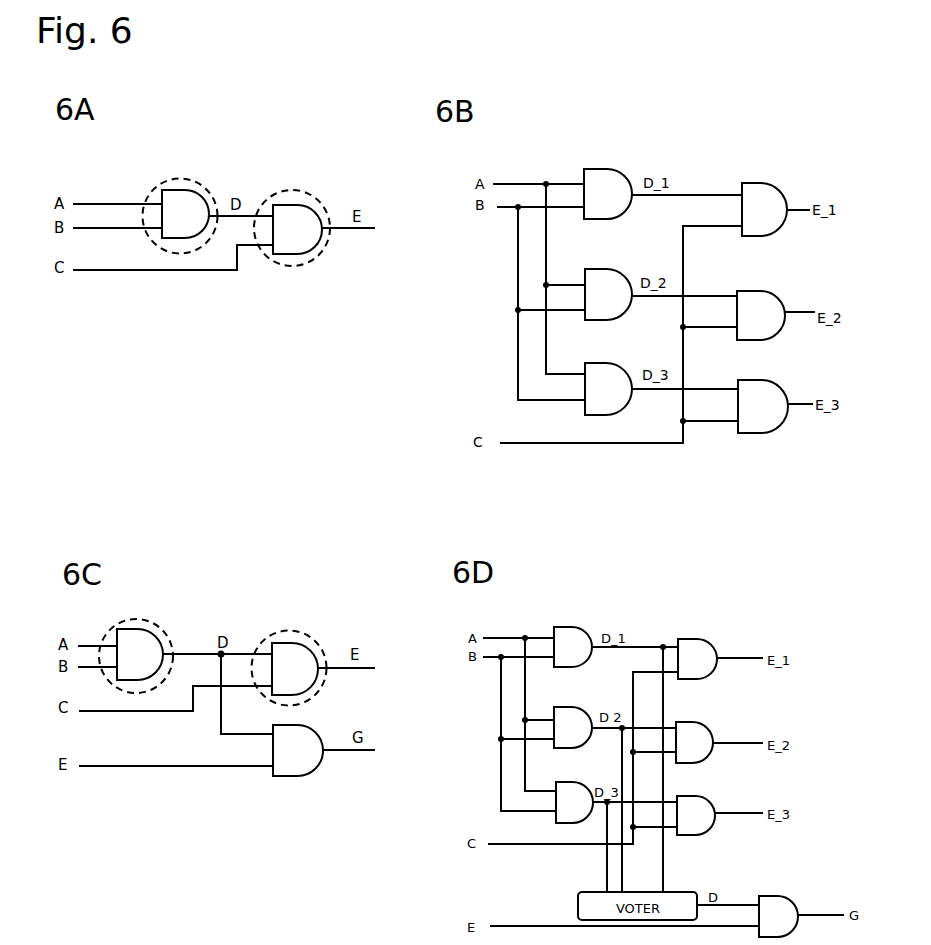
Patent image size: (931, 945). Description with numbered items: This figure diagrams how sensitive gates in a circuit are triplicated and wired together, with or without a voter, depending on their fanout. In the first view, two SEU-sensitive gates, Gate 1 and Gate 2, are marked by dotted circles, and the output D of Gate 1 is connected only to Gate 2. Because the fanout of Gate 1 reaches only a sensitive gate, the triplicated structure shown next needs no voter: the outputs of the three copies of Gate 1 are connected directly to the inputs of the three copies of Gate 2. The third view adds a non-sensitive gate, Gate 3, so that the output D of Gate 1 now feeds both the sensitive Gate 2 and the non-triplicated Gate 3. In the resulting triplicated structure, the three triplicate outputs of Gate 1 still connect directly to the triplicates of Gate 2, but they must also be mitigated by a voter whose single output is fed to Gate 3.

In FIG. 6A, the Gate 1 is at (180, 205).
In FIG. 6B, the Gate 1 is at (611, 277).
In FIG. 6C, the Gate 1 is at (136, 644).
In FIG. 6D, the Gate 1 is at (579, 713).
In FIG. 6A, the Gate 2 is at (292, 218).
In FIG. 6B, the Gate 2 is at (763, 292).
In FIG. 6C, the Gate 2 is at (289, 657).
In FIG. 6D, the Gate 2 is at (700, 724).
In FIG. 6C, the Gate 3 is at (292, 763).
In FIG. 6D, the Gate 3 is at (771, 906).